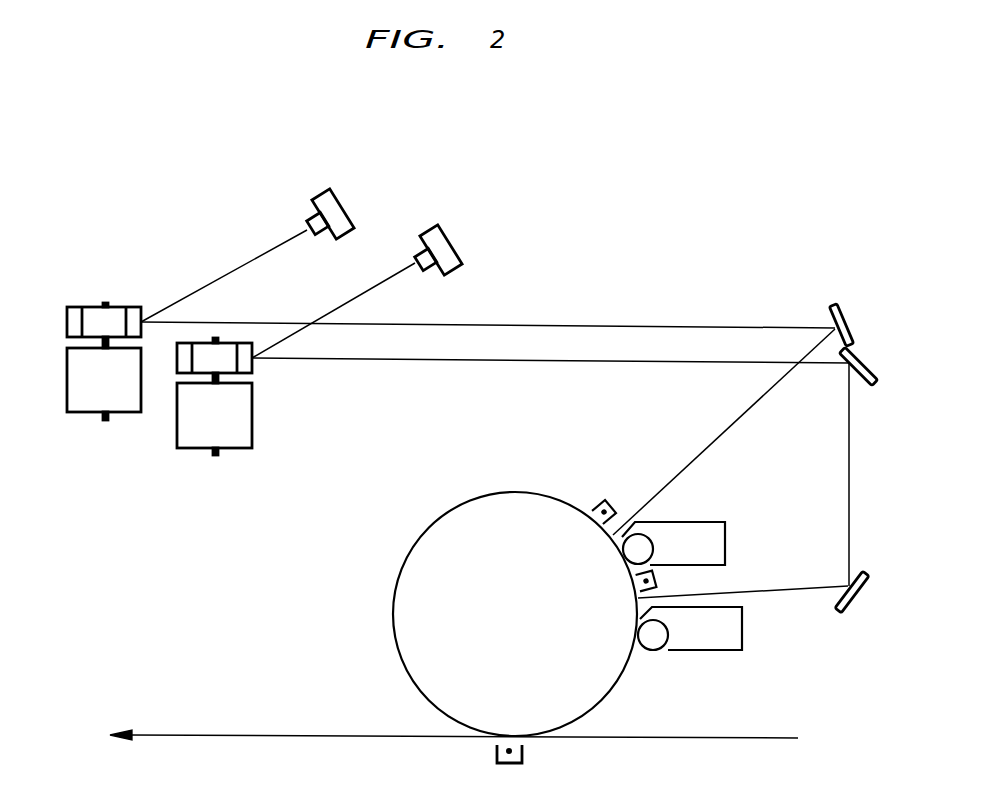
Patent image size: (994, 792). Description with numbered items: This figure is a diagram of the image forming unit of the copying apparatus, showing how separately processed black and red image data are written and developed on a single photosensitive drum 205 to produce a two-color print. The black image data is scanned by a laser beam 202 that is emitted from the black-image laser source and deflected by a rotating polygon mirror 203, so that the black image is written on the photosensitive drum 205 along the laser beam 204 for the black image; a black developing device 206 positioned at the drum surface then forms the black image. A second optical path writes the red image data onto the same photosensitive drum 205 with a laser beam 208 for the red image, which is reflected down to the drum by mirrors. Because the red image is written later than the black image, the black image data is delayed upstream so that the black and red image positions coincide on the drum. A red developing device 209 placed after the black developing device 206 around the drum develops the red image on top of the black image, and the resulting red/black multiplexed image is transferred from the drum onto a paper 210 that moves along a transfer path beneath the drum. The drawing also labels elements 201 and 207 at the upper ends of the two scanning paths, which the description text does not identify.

The laser unit 201 is at (323, 193).
The laser beam 202 is at (232, 269).
The polygon mirror 203 is at (85, 305).
The laser beam for the black image 204 is at (680, 470).
The photosensitive drum 205 is at (420, 537).
The black developing device 206 is at (725, 530).
The laser unit 207 is at (432, 224).
The laser beam for the red image 208 is at (849, 472).
The red developing device 209 is at (742, 633).
The paper 210 is at (272, 735).